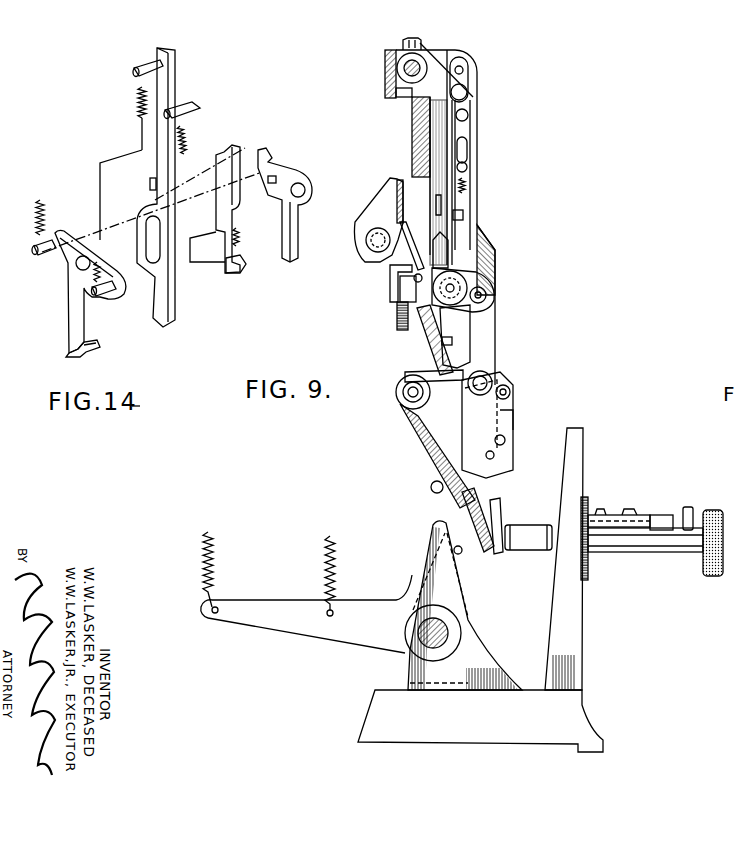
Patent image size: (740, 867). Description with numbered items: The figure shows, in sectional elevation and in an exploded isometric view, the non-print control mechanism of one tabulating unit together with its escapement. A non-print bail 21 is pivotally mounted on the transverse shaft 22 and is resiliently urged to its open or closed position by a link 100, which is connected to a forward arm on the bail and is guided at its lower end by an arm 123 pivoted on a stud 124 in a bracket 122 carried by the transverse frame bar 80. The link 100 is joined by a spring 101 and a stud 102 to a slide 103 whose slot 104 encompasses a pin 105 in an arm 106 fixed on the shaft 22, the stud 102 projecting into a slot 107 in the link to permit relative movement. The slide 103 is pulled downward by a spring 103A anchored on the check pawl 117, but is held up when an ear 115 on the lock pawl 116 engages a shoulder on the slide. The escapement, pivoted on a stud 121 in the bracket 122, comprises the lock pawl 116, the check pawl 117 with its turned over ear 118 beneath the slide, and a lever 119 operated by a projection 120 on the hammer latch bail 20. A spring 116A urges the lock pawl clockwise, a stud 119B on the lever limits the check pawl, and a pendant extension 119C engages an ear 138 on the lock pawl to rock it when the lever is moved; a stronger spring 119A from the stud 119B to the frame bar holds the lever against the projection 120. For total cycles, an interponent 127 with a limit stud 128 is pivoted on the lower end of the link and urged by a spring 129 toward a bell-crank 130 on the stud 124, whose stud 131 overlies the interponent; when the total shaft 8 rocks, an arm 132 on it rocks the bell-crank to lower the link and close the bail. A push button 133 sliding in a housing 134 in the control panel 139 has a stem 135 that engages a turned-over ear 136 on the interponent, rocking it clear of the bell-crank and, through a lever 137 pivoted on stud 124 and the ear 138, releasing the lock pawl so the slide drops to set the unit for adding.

In FIG. 9, the total shaft 8 is at (445, 633).
In FIG. 9, the hammer latch bail 20 is at (396, 197).
In FIG. 9, the non-print bail 21 is at (385, 70).
In FIG. 9, the transverse shaft 22 is at (420, 55).
In FIG. 9, the transverse frame bar 80 is at (412, 128).
In FIG. 9, the link 100 is at (489, 242).
In FIG. 14, the spring 101 is at (188, 142).
In FIG. 9, the spring 101 is at (478, 190).
In FIG. 14, the stud 102 is at (192, 117).
In FIG. 9, the stud 102 is at (467, 167).
In FIG. 14, the slide 103 is at (168, 83).
In FIG. 9, the slide 103 is at (470, 178).
In FIG. 14, the spring 103A is at (138, 103).
In FIG. 9, the slot 104 is at (468, 72).
In FIG. 9, the pin 105 is at (468, 113).
In FIG. 9, the arm 106 is at (466, 92).
In FIG. 9, the slot 107 is at (470, 150).
In FIG. 14, the ear 115 is at (149, 184).
In FIG. 9, the ear 115 is at (465, 214).
In FIG. 14, the lock pawl 116 is at (228, 148).
In FIG. 9, the lock pawl 116 is at (436, 240).
In FIG. 14, the spring 116A is at (238, 193).
In FIG. 9, the spring 116A is at (397, 320).
In FIG. 14, the check pawl 117 is at (67, 316).
In FIG. 9, the check pawl 117 is at (420, 356).
In FIG. 14, the turned over ear 118 is at (68, 358).
In FIG. 9, the turned over ear 118 is at (405, 376).
In FIG. 14, the lever 119 is at (283, 178).
In FIG. 9, the lever 119 is at (392, 285).
In FIG. 14, the spring 119A is at (43, 215).
In FIG. 14, the stud 119B is at (37, 254).
In FIG. 14, the pendant extension 119C is at (283, 260).
In FIG. 9, the projection 120 is at (410, 258).
In FIG. 9, the stud 121 is at (466, 282).
In FIG. 9, the bracket 122 is at (436, 200).
In FIG. 9, the arm 123 is at (476, 372).
In FIG. 9, the stud 124 is at (404, 401).
In FIG. 9, the interponent 127 is at (506, 411).
In FIG. 9, the limit stud 128 is at (510, 392).
In FIG. 9, the spring 129 is at (506, 441).
In FIG. 9, the bell-crank 130 is at (431, 487).
In FIG. 9, the stud 131 is at (498, 382).
In FIG. 9, the arm 132 is at (463, 578).
In FIG. 9, the push button 133 is at (716, 508).
In FIG. 9, the housing 134 is at (626, 508).
In FIG. 9, the stem 135 is at (519, 551).
In FIG. 9, the turned-over ear 136 is at (497, 508).
In FIG. 9, the lever 137 is at (477, 542).
In FIG. 14, the ear 138 is at (234, 279).
In FIG. 9, the ear 138 is at (452, 340).
In FIG. 9, the control panel 139 is at (572, 634).